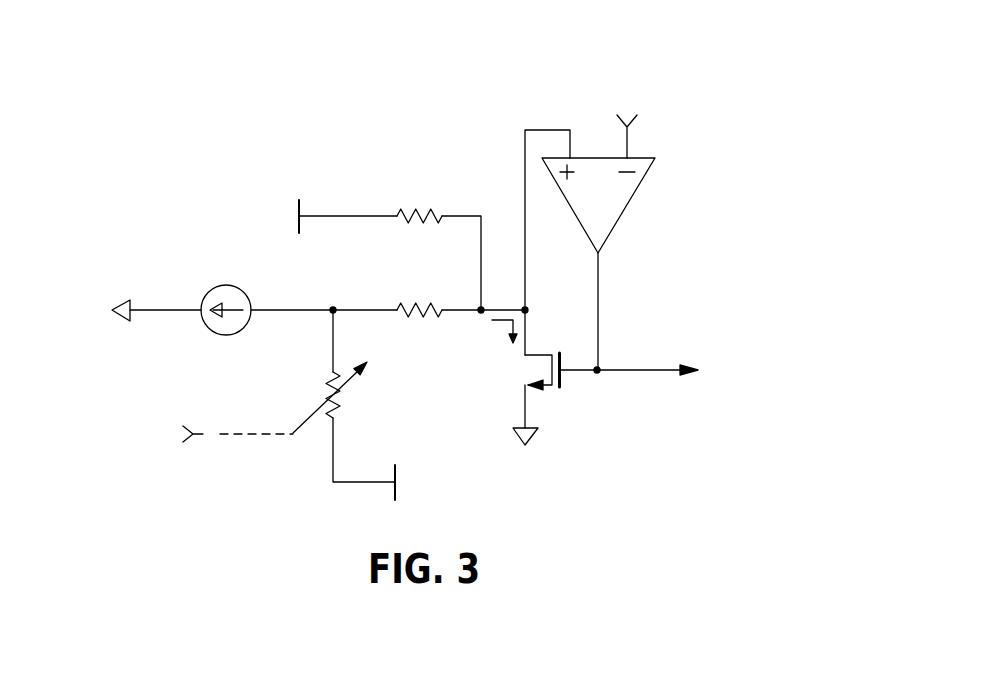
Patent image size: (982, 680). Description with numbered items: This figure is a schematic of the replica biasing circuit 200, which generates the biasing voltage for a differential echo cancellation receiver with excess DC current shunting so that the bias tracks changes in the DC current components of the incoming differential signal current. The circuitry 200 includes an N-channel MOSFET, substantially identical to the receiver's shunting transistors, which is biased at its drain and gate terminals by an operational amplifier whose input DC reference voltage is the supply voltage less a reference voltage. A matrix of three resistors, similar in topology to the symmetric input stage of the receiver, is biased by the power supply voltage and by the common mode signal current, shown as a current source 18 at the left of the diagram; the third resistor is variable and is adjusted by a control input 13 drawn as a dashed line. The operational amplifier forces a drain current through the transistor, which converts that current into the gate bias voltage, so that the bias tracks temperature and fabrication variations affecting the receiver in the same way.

The replica biasing circuit 200 is at (747, 92).
The common-mode current source 18 is at (208, 292).
The control input signal 13 is at (220, 433).